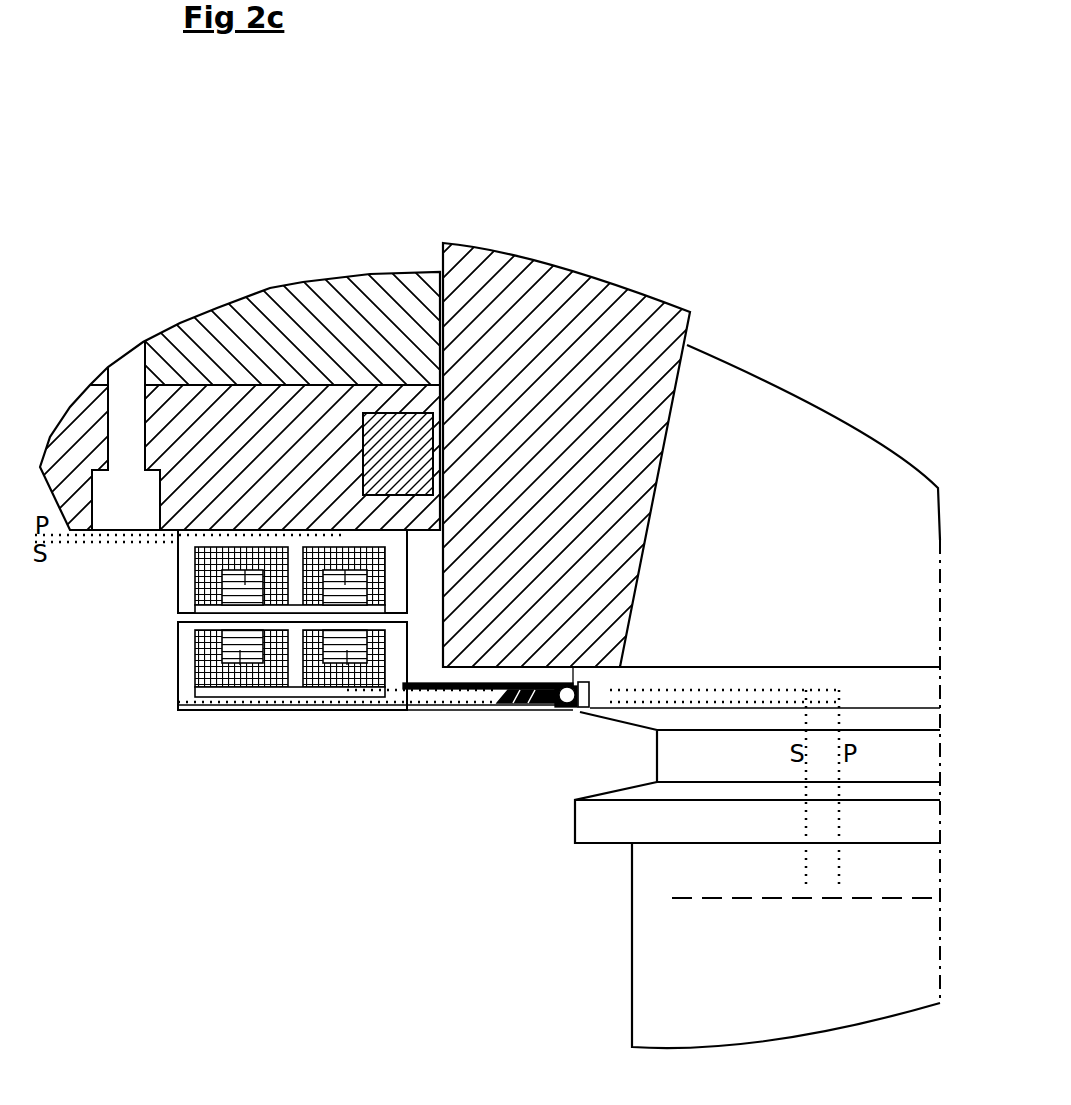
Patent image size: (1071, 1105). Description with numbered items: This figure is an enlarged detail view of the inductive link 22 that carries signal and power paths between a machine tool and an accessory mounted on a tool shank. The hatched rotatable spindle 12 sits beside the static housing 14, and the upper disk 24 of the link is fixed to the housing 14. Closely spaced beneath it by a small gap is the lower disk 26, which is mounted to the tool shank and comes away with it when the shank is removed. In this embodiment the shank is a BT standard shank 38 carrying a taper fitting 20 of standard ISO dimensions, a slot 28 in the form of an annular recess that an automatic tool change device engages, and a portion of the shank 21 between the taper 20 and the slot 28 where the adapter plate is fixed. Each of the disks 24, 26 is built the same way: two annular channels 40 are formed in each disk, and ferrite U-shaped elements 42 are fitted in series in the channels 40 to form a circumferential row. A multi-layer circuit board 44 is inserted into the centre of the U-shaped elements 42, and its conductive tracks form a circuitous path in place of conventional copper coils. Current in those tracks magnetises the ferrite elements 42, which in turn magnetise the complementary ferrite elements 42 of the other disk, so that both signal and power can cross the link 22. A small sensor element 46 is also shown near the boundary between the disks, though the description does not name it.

The spindle 12 is at (635, 302).
The housing 14 is at (318, 297).
The taper fitting 20 is at (768, 577).
The portion of the shank 21 is at (590, 712).
The inductive link 22 is at (487, 628).
The upper disk 24 is at (178, 580).
The lower disk 26 is at (178, 668).
The slot 28 is at (633, 755).
The BT standard shank 38 is at (545, 863).
The annular channel 40 is at (197, 592).
The ferrite U-shaped element 42 is at (197, 555).
The multi-layer circuit board 44 is at (247, 552).
The sensor 46 is at (523, 707).